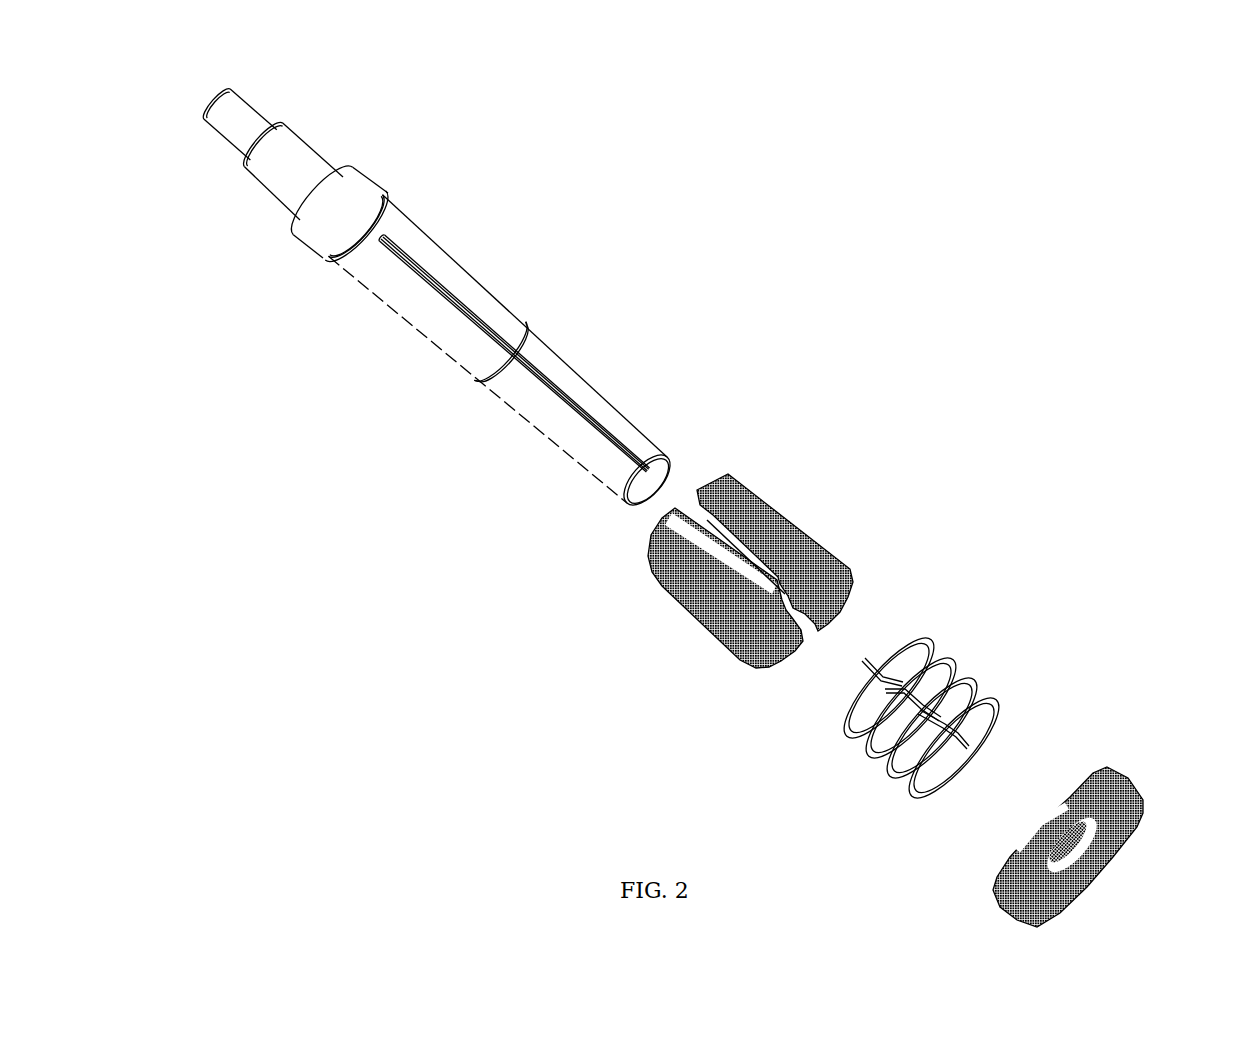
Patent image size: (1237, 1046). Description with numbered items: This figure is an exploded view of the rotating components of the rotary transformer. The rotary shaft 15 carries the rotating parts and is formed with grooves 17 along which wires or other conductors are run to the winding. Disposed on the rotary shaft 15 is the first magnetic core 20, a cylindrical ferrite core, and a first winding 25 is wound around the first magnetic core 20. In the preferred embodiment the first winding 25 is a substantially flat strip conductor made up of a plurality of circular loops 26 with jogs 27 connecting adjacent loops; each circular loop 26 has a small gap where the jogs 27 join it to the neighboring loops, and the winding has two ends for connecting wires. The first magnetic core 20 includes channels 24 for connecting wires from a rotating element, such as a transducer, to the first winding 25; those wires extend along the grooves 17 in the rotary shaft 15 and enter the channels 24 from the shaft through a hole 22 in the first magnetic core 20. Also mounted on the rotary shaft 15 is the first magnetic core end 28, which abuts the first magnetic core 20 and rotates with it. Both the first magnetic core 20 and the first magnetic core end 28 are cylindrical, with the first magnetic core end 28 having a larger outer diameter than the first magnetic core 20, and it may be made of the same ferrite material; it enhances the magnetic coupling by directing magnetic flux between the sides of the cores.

The rotary shaft 15 is at (440, 301).
The grooves 17 is at (562, 388).
The first magnetic core 20 is at (781, 548).
The hole 22 is at (770, 503).
The channels 24 is at (812, 540).
The first winding 25 is at (961, 720).
The circular loops 26 is at (878, 753).
The jogs 27 is at (942, 653).
The first magnetic core end 28 is at (1116, 766).